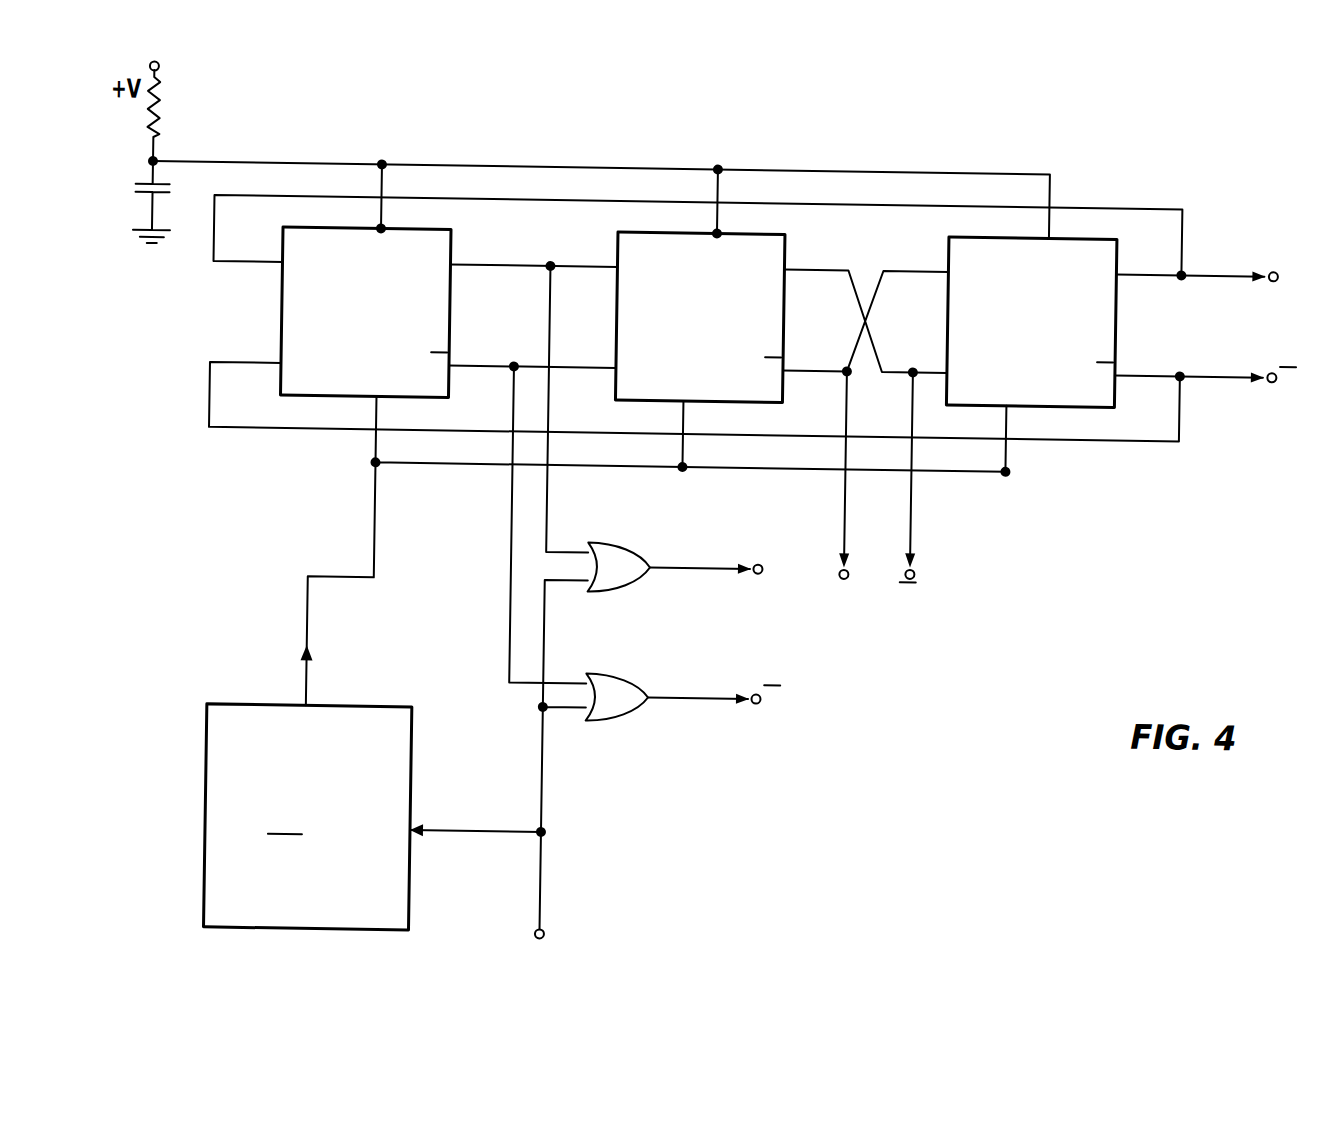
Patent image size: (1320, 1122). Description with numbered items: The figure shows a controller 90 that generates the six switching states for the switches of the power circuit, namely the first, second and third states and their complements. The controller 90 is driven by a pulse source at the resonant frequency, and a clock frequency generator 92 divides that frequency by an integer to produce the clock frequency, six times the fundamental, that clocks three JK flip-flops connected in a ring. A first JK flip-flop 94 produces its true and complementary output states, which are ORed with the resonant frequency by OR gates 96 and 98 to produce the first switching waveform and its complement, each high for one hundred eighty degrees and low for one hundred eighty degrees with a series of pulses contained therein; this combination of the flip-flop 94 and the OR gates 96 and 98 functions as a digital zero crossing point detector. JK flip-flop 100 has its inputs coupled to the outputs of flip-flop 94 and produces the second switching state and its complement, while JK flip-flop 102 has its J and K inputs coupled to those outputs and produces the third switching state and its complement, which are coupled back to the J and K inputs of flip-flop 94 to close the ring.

The controller 90 is at (1010, 526).
The clock frequency generator 92 is at (215, 735).
The first JK flip-flop 94 is at (284, 306).
The OR gate 96 is at (646, 548).
The OR gate 98 is at (646, 678).
The JK flip-flop 100 is at (619, 308).
The JK flip-flop 102 is at (950, 306).